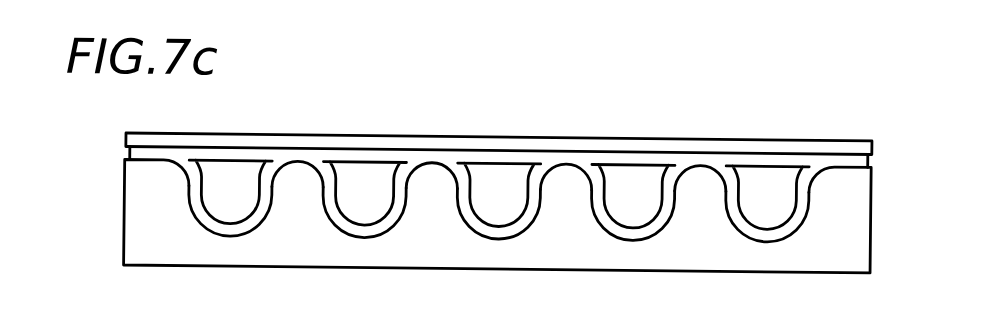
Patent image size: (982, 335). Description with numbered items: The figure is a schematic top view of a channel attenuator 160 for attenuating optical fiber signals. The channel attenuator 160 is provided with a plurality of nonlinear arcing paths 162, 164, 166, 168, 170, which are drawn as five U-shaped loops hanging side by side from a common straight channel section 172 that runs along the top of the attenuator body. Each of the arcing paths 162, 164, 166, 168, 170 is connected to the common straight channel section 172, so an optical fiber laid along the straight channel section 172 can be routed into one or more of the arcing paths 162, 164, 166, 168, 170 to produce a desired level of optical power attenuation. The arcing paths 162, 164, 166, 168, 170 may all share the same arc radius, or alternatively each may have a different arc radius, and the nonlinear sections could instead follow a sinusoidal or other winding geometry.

The channel attenuator 160 is at (100, 212).
The nonlinear arcing path 162 is at (223, 228).
The nonlinear arcing path 164 is at (357, 228).
The nonlinear arcing path 166 is at (494, 228).
The nonlinear arcing path 168 is at (625, 228).
The nonlinear arcing path 170 is at (760, 227).
The common straight channel section 172 is at (480, 154).